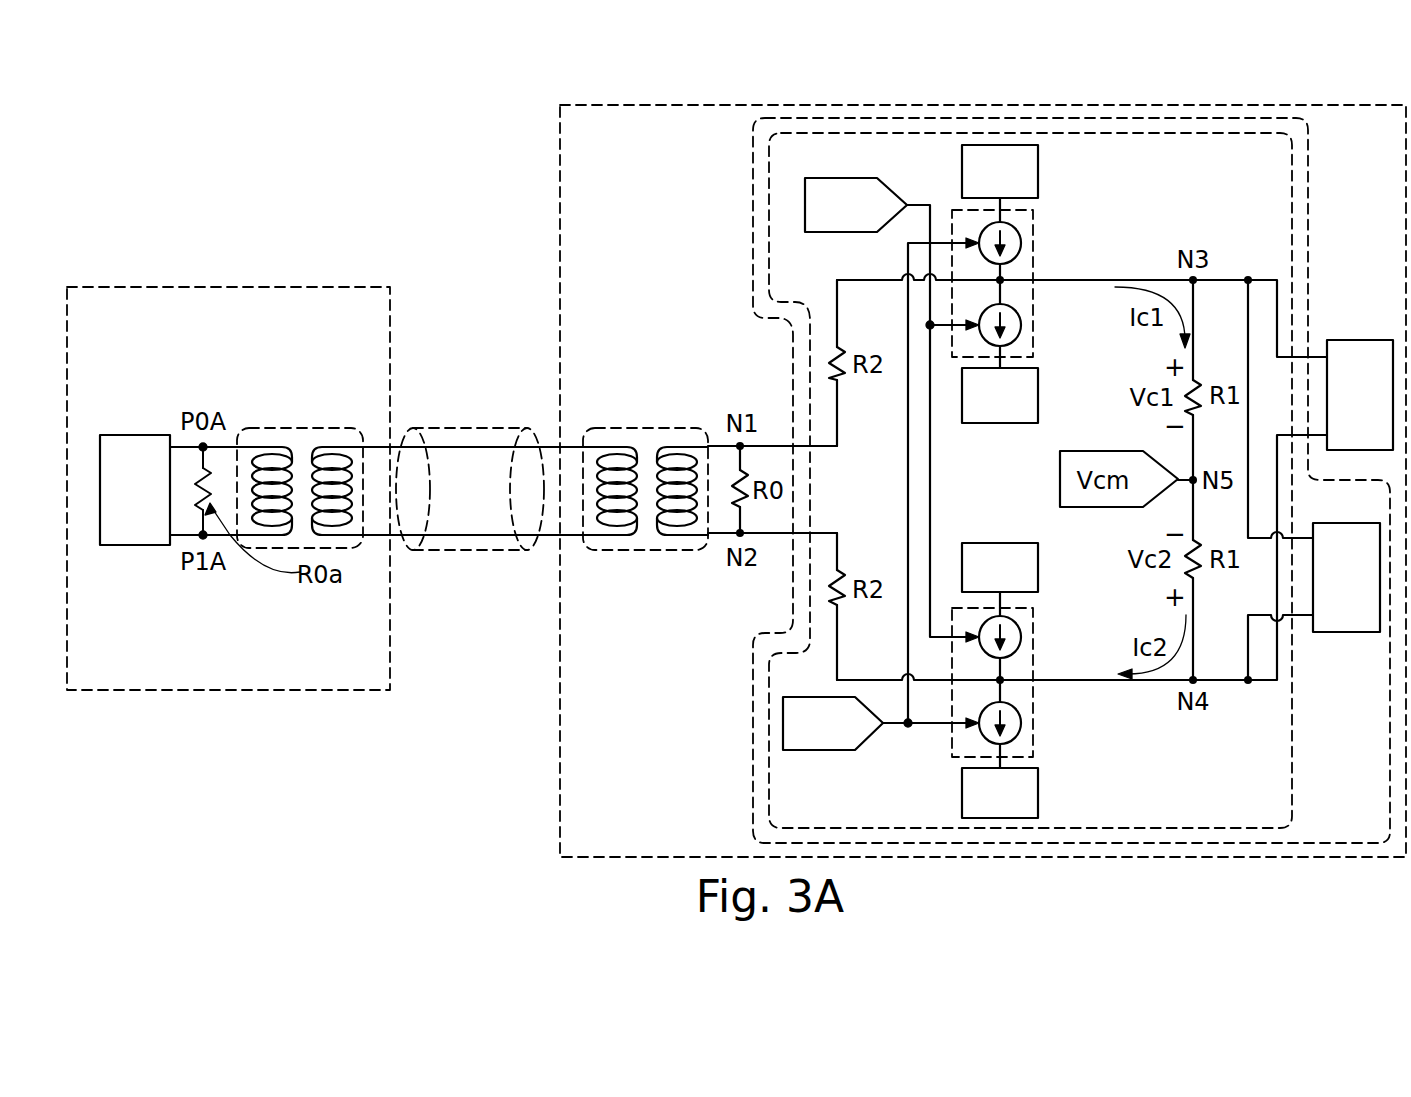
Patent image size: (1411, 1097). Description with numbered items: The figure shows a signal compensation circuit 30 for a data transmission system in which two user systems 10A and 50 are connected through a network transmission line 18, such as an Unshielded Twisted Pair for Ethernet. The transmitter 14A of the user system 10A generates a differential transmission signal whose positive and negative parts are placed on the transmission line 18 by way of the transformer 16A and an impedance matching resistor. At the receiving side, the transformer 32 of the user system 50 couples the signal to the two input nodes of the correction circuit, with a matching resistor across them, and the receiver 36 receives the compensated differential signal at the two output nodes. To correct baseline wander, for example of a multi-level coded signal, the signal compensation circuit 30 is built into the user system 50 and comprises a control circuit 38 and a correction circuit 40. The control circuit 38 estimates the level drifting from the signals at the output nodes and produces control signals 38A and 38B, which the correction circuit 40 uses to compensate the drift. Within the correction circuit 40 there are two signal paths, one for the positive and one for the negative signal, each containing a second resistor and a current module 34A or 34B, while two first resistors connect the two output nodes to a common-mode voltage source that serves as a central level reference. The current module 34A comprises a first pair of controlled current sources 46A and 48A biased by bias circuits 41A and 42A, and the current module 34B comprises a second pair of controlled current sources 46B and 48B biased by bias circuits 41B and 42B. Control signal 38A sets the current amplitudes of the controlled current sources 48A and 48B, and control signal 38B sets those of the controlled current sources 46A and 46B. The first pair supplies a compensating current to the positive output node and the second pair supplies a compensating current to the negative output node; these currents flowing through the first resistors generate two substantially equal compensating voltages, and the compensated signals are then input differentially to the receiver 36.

The user system 10A is at (392, 320).
The transmitter 14A is at (135, 490).
The transformer 16A is at (278, 428).
The network transmission line 18 is at (433, 428).
The transformer 32 is at (635, 428).
The user system 50 is at (560, 227).
The signal compensation circuit 30 is at (753, 723).
The correction circuit 40 is at (1292, 750).
The receiver 36 is at (1360, 395).
The control circuit 38 is at (1346, 577).
The control signal 38A is at (892, 410).
The control signal 38B is at (881, 494).
The bias circuit 41A is at (1000, 171).
The bias circuit 41B is at (1000, 567).
The bias circuit 42A is at (1000, 395).
The bias circuit 42B is at (1000, 793).
The current module 34A is at (1040, 267).
The current module 34B is at (1040, 697).
The controlled current source 46A is at (1021, 243).
The controlled current source 46B is at (1021, 723).
The controlled current source 48A is at (1020, 325).
The controlled current source 48B is at (1020, 637).